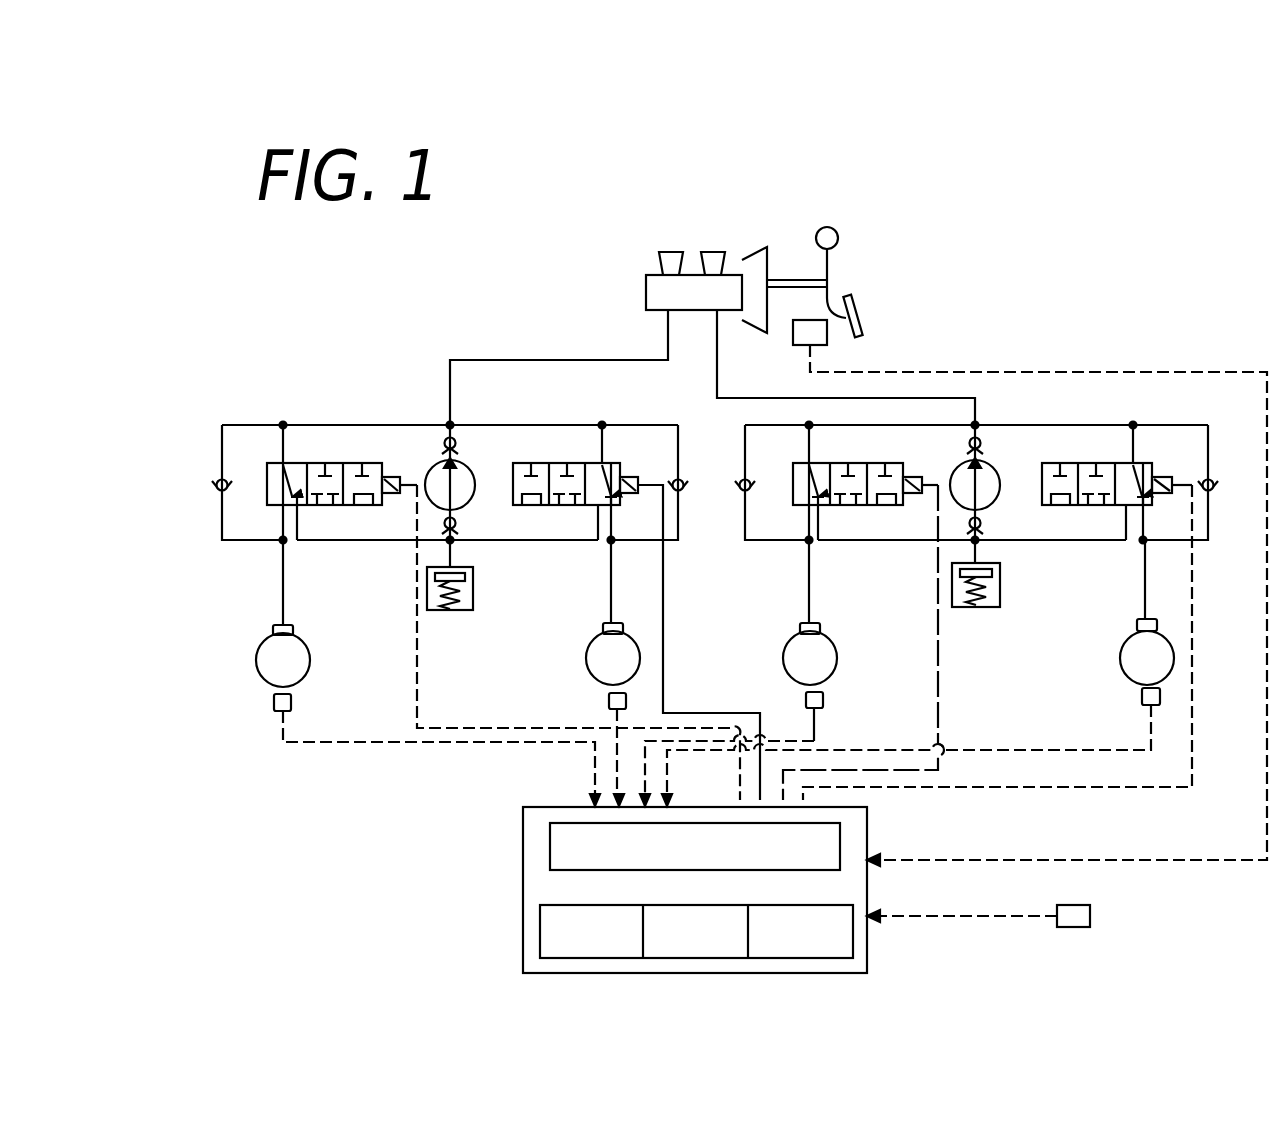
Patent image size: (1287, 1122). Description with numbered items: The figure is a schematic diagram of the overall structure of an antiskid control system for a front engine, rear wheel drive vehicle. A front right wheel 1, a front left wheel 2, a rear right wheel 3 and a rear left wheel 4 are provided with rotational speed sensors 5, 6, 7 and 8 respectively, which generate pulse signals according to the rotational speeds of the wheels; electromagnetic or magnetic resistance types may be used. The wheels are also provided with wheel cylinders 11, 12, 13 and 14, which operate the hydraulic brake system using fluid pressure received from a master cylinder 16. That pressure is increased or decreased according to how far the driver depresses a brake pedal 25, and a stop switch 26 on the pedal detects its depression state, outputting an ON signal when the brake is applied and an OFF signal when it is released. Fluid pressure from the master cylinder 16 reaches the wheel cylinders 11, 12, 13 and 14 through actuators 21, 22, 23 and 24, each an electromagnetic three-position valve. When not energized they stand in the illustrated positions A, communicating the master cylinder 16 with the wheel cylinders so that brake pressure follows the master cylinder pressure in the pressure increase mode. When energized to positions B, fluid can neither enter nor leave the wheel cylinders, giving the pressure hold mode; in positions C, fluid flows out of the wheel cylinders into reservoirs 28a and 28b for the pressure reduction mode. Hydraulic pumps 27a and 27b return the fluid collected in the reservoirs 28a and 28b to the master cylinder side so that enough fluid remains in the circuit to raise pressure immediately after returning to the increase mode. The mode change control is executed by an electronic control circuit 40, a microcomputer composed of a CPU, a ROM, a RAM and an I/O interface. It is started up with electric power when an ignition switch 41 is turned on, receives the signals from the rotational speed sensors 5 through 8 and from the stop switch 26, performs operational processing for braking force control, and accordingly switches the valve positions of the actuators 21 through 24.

The front right wheel 1 is at (256, 660).
The front left wheel 2 is at (586, 660).
The rear right wheel 3 is at (782, 660).
The rear left wheel 4 is at (1122, 660).
The rotational speed sensor 5 is at (292, 704).
The rotational speed sensor 6 is at (606, 700).
The rotational speed sensor 7 is at (823, 702).
The rotational speed sensor 8 is at (1142, 700).
The wheel cylinder 11 is at (292, 626).
The wheel cylinder 12 is at (607, 621).
The wheel cylinder 13 is at (800, 620).
The wheel cylinder 14 is at (1135, 619).
The master cylinder 16 is at (646, 295).
The actuator 21 is at (354, 506).
The actuator 22 is at (548, 506).
The actuator 23 is at (856, 506).
The actuator 24 is at (1078, 506).
The brake pedal 25 is at (856, 300).
The stop switch 26 is at (790, 328).
The hydraulic pump 27a is at (473, 478).
The hydraulic pump 27b is at (998, 478).
The reservoir 28a is at (473, 590).
The reservoir 28b is at (1000, 586).
The electronic control circuit 40 is at (870, 834).
The ignition switch 41 is at (1090, 916).